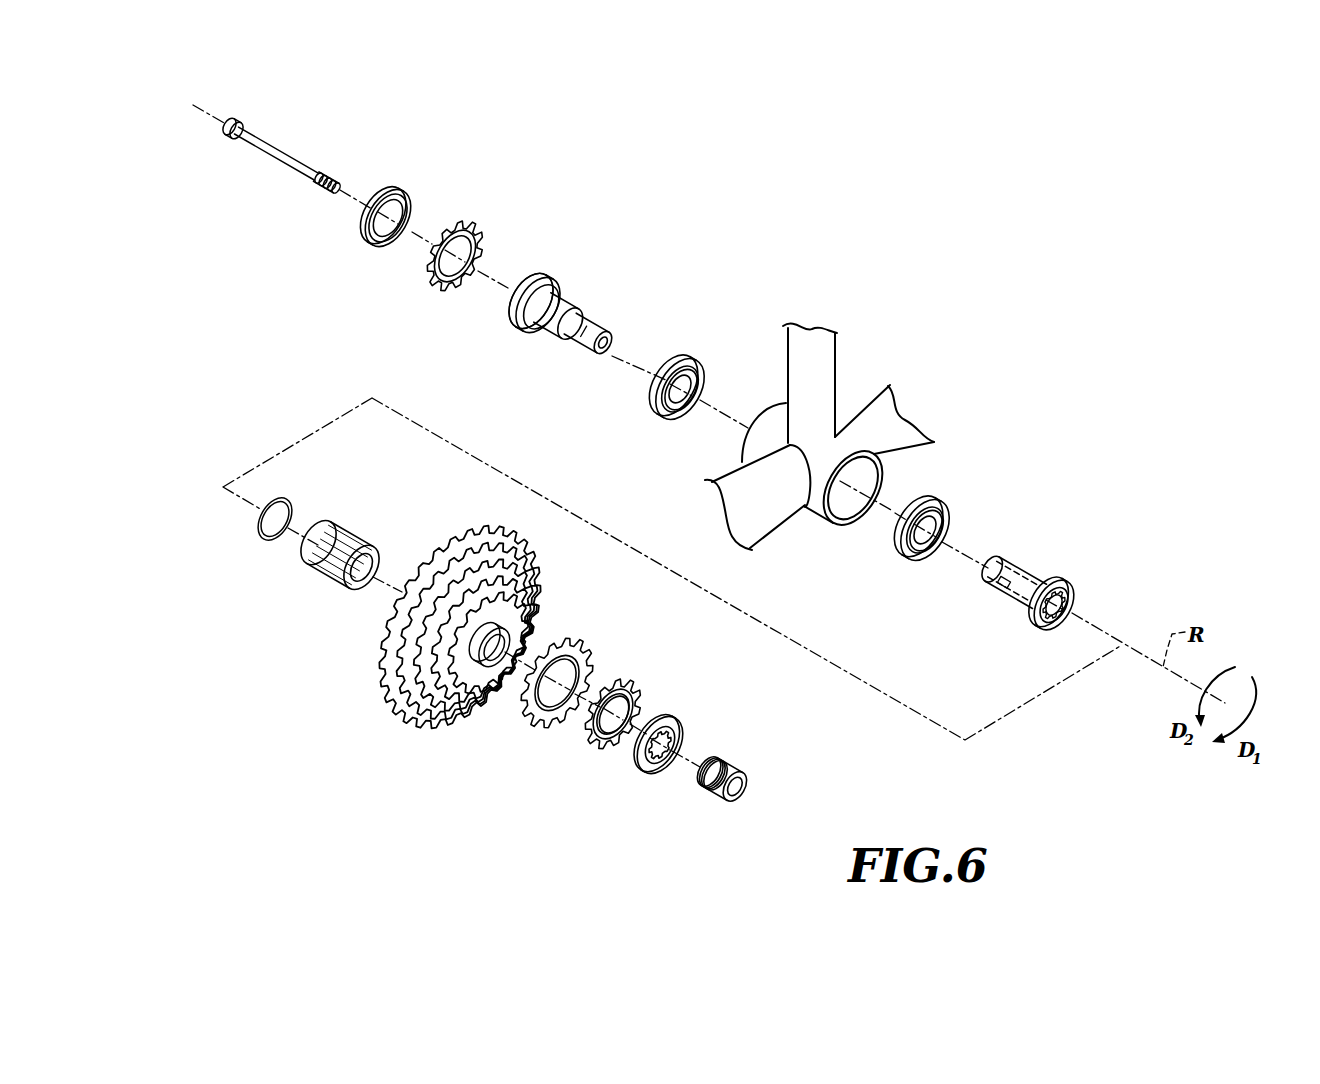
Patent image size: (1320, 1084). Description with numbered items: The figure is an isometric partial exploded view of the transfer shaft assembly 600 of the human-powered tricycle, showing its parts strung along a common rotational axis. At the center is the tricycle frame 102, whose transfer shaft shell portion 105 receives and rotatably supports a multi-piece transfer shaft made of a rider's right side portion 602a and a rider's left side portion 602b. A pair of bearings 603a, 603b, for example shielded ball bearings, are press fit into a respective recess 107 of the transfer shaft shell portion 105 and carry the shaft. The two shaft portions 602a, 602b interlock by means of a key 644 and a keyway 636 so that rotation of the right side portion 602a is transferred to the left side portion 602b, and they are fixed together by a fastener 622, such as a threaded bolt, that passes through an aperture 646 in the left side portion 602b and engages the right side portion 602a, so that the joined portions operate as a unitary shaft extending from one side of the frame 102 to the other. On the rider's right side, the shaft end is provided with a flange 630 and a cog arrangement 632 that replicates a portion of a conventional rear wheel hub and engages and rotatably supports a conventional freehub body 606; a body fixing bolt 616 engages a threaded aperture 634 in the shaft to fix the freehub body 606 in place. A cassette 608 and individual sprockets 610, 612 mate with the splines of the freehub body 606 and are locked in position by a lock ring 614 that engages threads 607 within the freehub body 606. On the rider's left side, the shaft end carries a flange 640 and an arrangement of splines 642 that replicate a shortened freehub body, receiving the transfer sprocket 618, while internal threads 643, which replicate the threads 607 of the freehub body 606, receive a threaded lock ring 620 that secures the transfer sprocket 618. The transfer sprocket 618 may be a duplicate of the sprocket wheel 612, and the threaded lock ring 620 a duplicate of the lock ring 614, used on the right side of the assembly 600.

The transfer shaft assembly 600 is at (240, 701).
The tricycle frame 102 is at (828, 373).
The transfer shaft shell portion 105 is at (773, 420).
The recess 107 is at (868, 487).
The rider's right side transfer shaft portion 602a is at (1010, 565).
The rider's left side transfer shaft portion 602b is at (574, 303).
The bearing 603a is at (945, 513).
The bearing 603b is at (693, 360).
The freehub body 606 is at (370, 545).
The threads 607 is at (380, 562).
The cassette 608 is at (527, 580).
The sprocket 610 is at (583, 652).
The sprocket wheel 612 is at (630, 688).
The lock ring 614 is at (675, 724).
The body fixing bolt 616 is at (728, 775).
The transfer sprocket 618 is at (475, 228).
The threaded lock ring 620 is at (404, 196).
The fastener 622 is at (295, 162).
The flange 630 is at (1062, 586).
The cog arrangement 632 is at (1068, 599).
The threaded aperture 634 is at (1084, 612).
The keyway 636 is at (1004, 592).
The flange 640 is at (551, 320).
The arrangement of splines 642 is at (514, 306).
The internal threads 643 is at (517, 277).
The key 644 is at (601, 332).
The aperture 646 is at (576, 344).